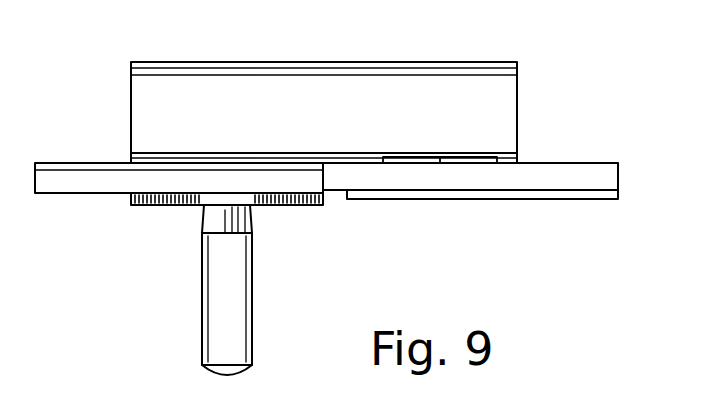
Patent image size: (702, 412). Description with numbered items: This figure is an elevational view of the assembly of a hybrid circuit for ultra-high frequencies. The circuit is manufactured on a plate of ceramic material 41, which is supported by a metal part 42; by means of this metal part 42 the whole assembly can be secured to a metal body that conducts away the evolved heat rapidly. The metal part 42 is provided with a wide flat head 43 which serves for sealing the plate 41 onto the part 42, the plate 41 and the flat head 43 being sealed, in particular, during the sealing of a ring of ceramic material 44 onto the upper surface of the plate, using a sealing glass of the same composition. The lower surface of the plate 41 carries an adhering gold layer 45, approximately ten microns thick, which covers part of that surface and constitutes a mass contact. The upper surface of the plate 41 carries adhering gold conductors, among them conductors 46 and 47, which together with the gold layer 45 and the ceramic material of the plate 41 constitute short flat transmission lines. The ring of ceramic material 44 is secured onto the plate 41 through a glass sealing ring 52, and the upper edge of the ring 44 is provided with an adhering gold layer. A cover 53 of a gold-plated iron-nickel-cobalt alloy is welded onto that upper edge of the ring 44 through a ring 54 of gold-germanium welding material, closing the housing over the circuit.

The plate of ceramic material 41 is at (84, 176).
The metal part 42 is at (236, 307).
The wide flat head 43 is at (160, 205).
The ring of ceramic material 44 is at (143, 97).
The adhering gold layer 45 is at (478, 195).
The adhering gold conductor 46 is at (568, 163).
The adhering gold conductor 47 is at (470, 163).
The glass sealing ring 52 is at (143, 164).
The cover 53 is at (210, 63).
The ring of gold-germanium welding material 54 is at (512, 69).